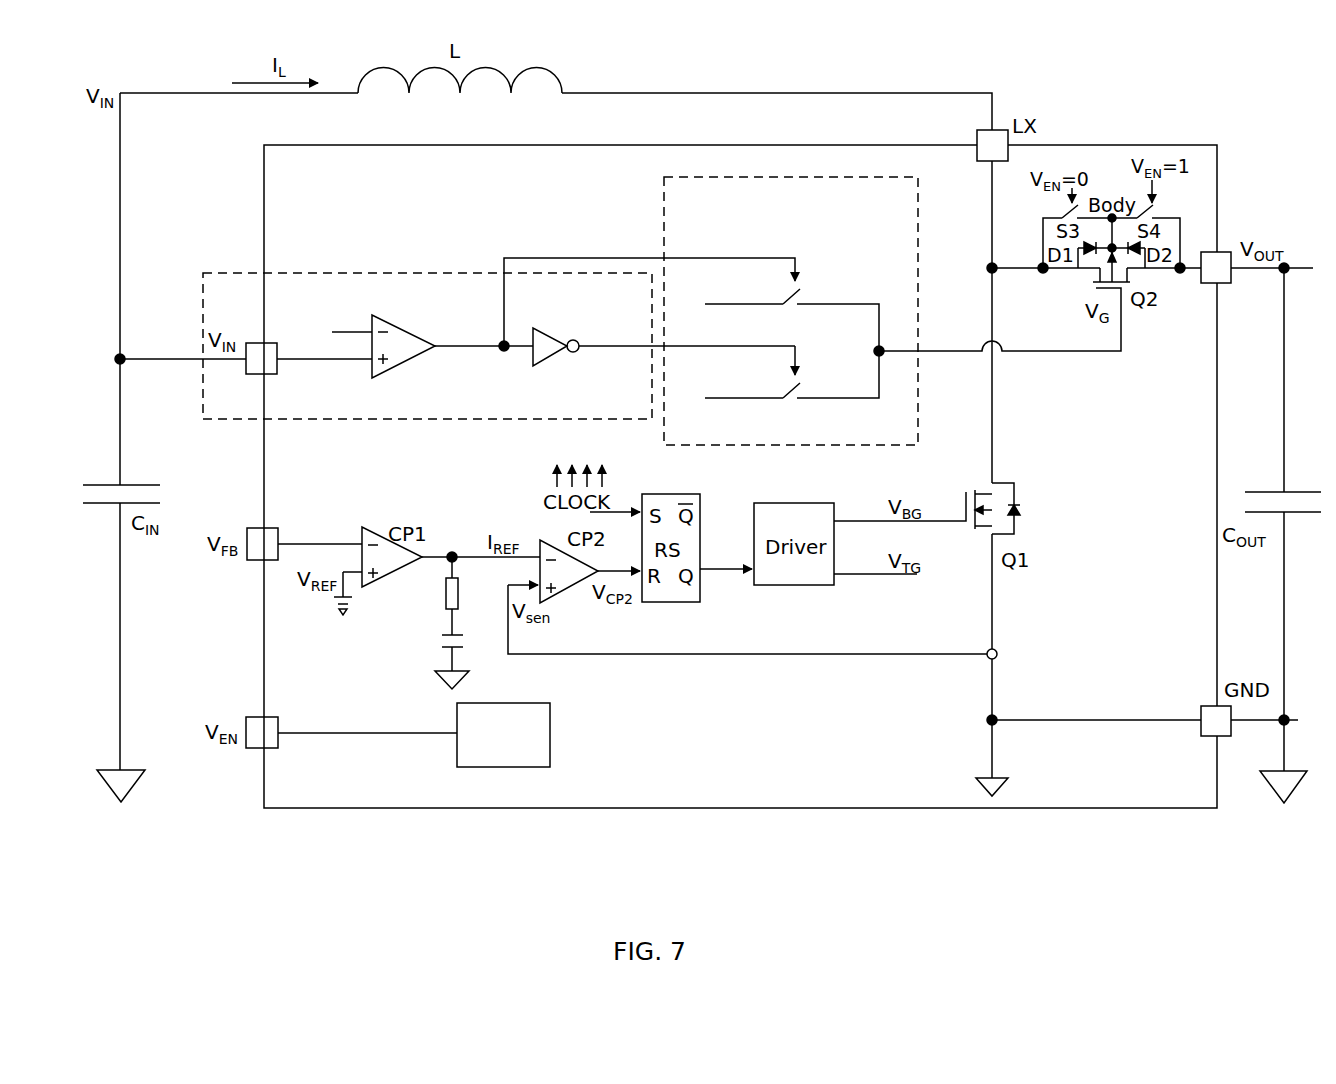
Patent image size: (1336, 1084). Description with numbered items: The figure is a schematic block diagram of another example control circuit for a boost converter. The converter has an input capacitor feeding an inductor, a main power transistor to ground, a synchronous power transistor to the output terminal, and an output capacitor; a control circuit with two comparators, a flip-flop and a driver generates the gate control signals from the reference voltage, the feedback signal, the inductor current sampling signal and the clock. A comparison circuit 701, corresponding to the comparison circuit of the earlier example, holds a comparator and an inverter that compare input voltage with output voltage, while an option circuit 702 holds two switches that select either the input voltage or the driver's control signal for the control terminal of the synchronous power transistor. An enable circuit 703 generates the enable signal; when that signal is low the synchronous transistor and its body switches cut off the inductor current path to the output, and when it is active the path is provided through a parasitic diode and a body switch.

The comparison circuit 701 is at (624, 412).
The option circuit 702 is at (886, 264).
The enable circuit 703 is at (478, 768).